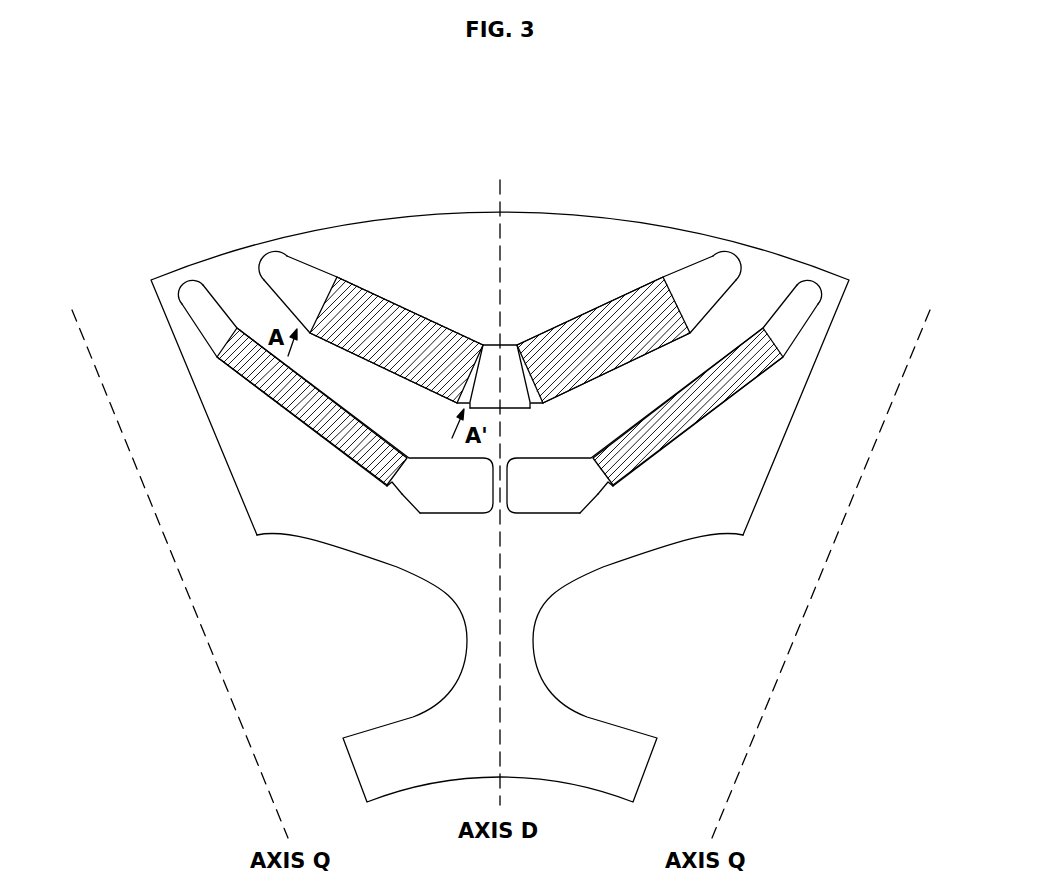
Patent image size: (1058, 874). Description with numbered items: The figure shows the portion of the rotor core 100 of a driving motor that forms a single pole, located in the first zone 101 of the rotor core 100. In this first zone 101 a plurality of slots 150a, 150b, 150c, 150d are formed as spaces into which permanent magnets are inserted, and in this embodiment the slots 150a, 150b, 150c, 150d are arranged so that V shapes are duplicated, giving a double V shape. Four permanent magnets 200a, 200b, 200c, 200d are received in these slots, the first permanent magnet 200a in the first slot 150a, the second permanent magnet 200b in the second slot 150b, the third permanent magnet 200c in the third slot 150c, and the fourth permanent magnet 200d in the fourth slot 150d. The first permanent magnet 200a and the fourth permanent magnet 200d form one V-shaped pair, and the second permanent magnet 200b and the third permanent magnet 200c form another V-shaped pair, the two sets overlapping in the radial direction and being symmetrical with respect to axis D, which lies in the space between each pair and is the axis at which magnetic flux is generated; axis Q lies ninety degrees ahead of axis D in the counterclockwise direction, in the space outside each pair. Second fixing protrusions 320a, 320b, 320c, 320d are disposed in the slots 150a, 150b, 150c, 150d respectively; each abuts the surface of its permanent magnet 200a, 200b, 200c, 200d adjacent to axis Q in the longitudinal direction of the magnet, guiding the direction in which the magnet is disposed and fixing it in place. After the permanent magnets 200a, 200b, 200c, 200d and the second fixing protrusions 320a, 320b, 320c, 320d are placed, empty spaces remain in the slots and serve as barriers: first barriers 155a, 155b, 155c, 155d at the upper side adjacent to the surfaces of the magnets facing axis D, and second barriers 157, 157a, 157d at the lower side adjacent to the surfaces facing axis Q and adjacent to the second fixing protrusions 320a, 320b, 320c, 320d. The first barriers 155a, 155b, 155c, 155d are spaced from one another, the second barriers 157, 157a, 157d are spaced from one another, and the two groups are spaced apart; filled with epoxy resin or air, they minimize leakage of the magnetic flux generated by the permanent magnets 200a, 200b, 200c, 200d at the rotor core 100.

The rotor core 100 is at (516, 115).
The first zone 101 is at (553, 575).
The first slot 150a is at (180, 293).
The second slot 150b is at (280, 277).
The third slot 150c is at (708, 273).
The fourth slot 150d is at (820, 293).
The first barrier 155a is at (210, 300).
The first barrier 155b is at (298, 272).
The first barrier 155c is at (680, 277).
The first barrier 155d is at (800, 300).
The second barrier 157 is at (490, 363).
The second barrier 157a is at (423, 507).
The second barrier 157d is at (577, 507).
The first permanent magnet 200a is at (290, 398).
The second permanent magnet 200b is at (373, 310).
The third permanent magnet 200c is at (598, 310).
The fourth permanent magnet 200d is at (723, 393).
The second fixing protrusion 320a is at (393, 490).
The second fixing protrusion 320b is at (462, 403).
The second fixing protrusion 320c is at (538, 403).
The second fixing protrusion 320d is at (607, 490).